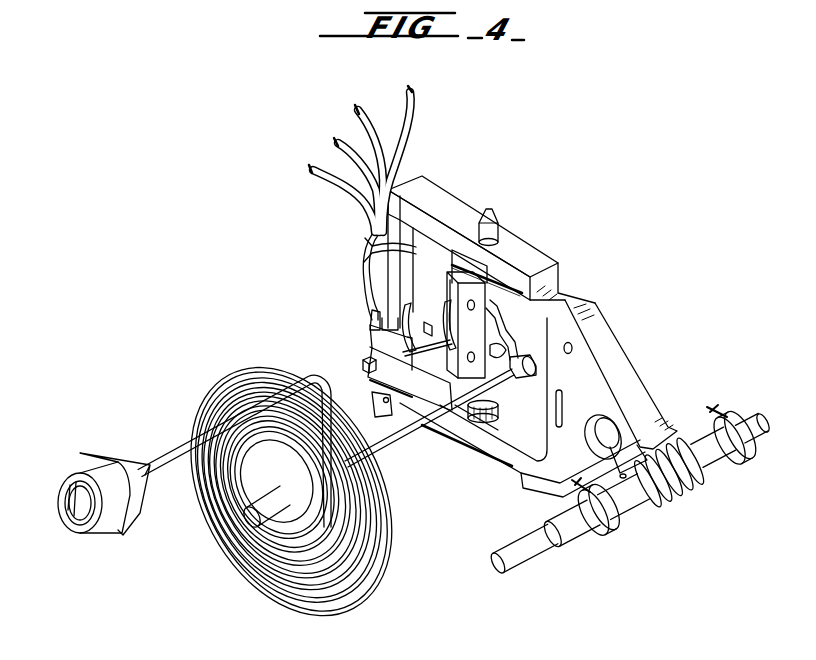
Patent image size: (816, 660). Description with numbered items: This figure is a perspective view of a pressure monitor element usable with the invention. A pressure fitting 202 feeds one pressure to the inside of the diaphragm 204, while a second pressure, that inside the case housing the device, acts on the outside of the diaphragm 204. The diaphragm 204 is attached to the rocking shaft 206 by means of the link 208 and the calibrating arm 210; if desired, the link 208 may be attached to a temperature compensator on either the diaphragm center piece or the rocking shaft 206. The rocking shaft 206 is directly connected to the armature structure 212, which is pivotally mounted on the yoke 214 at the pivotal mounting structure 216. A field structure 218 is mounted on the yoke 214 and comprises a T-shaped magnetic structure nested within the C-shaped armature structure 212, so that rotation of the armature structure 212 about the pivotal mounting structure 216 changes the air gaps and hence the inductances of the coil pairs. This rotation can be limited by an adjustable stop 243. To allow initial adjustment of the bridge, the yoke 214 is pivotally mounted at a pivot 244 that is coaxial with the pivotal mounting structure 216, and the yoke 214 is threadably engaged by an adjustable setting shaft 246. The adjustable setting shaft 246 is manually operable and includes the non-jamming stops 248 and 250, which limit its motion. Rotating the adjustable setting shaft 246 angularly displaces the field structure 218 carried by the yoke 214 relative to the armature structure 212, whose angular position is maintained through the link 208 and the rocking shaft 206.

The pressure fitting 202 is at (123, 535).
The diaphragm 204 is at (307, 610).
The rocking shaft 206 is at (467, 293).
The link 208 is at (408, 442).
The calibrating arm 210 is at (528, 380).
The armature structure 212 is at (437, 370).
The yoke 214 is at (612, 374).
The pivotal mounting structure 216 is at (490, 420).
The field structure 218 is at (428, 330).
The adjustable stop 243 is at (363, 365).
The pivot 244 is at (497, 212).
The adjustable setting shaft 246 is at (497, 577).
The non-jamming stop 248 is at (612, 527).
The non-jamming stop 250 is at (743, 462).